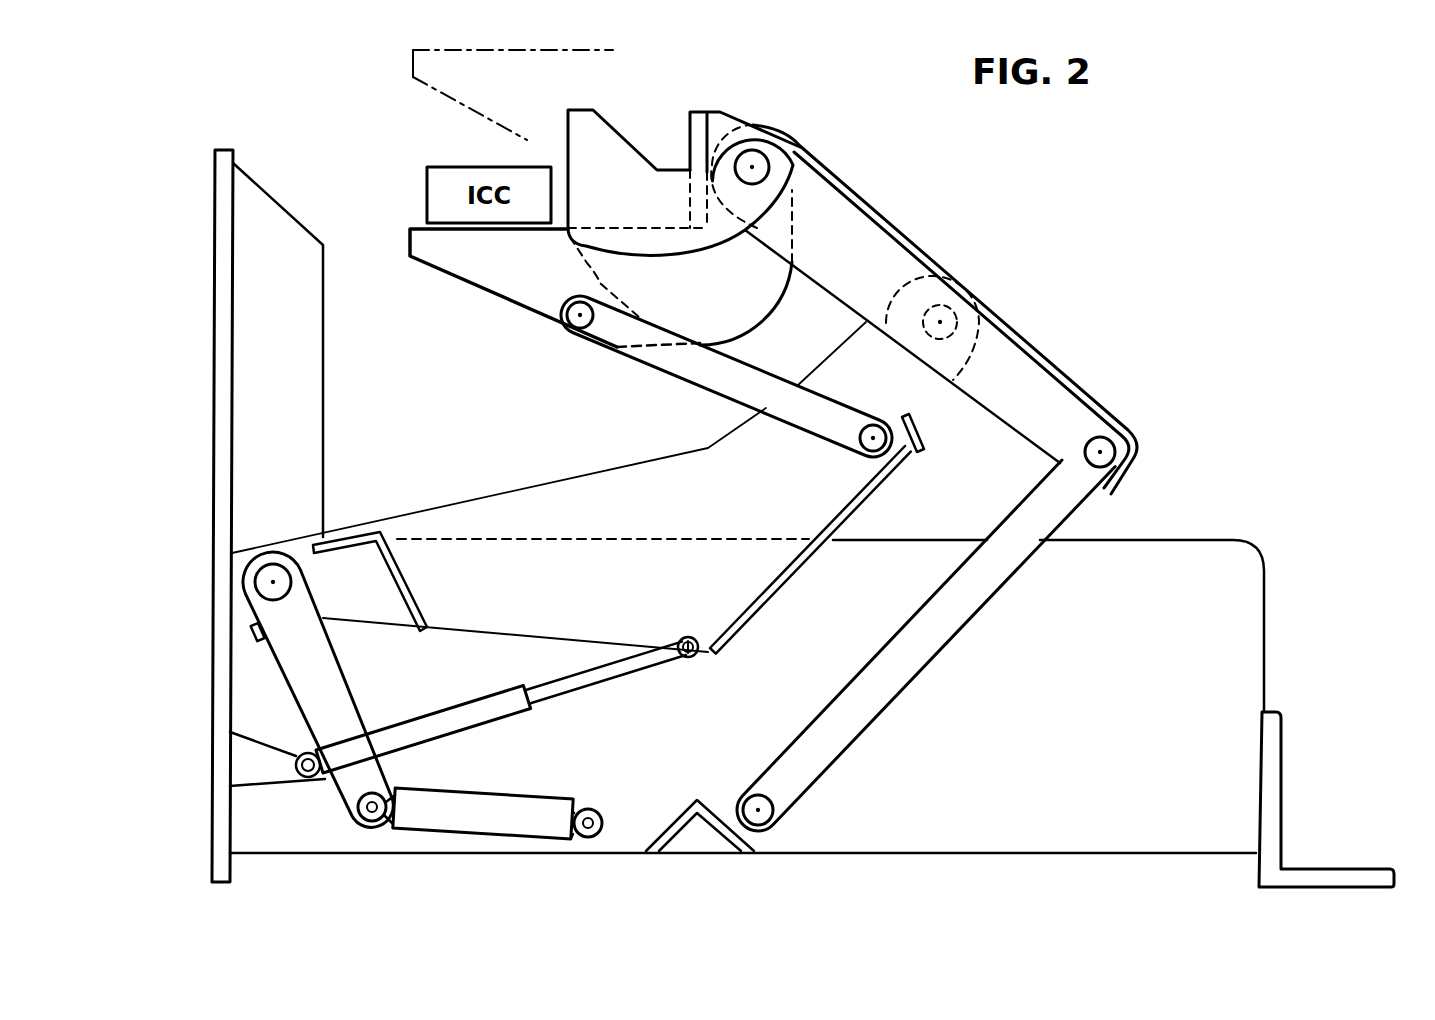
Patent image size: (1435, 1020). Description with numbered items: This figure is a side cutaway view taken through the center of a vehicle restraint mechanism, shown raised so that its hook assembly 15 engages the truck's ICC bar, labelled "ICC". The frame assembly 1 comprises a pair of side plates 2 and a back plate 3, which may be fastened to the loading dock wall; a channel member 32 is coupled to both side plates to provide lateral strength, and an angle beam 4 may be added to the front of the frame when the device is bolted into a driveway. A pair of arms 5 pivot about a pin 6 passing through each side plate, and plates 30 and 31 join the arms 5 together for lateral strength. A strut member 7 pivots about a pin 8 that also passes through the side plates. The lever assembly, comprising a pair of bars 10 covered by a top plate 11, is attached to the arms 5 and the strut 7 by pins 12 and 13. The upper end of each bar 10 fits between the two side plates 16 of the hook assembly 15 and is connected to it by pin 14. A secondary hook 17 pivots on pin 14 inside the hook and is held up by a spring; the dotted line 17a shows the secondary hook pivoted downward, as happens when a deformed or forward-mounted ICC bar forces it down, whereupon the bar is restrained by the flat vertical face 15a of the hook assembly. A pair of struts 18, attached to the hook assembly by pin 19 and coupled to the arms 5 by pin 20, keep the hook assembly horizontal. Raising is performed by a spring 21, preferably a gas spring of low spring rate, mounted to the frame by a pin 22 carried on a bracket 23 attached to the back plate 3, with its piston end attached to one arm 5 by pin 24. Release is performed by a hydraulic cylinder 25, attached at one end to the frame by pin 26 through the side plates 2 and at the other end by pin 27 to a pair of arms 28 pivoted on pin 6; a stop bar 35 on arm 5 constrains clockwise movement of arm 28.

The frame assembly 1 is at (793, 696).
The side plates 2 is at (1268, 579).
The back plate 3 is at (215, 268).
The angle beam 4 is at (1282, 778).
The arms 5 is at (635, 464).
The pin 6 is at (255, 583).
The strut member 7 is at (912, 681).
The pin 8 is at (774, 809).
The bars 10 is at (1048, 384).
The top plate 11 is at (1016, 334).
The pin 12 is at (957, 320).
The pin 13 is at (1136, 456).
The pin 14 is at (772, 168).
The hook assembly 15 is at (600, 236).
The side plates 16 is at (472, 285).
The flat vertical face 15a is at (687, 127).
The secondary hook 17 is at (610, 137).
The downward position of secondary hook 17a is at (598, 279).
The struts 18 is at (680, 377).
The pin 19 is at (563, 326).
The pin 20 is at (917, 450).
The spring 21 is at (488, 722).
The pin 22 is at (298, 758).
The bracket 23 is at (246, 788).
The pin 24 is at (692, 659).
The hydraulic cylinder 25 is at (519, 794).
The pin 26 is at (600, 816).
The pin 27 is at (357, 806).
The arms 28 is at (354, 694).
The plate 30 is at (413, 604).
The plate 31 is at (794, 571).
The channel member 32 is at (688, 806).
The stop bar 35 is at (254, 638).